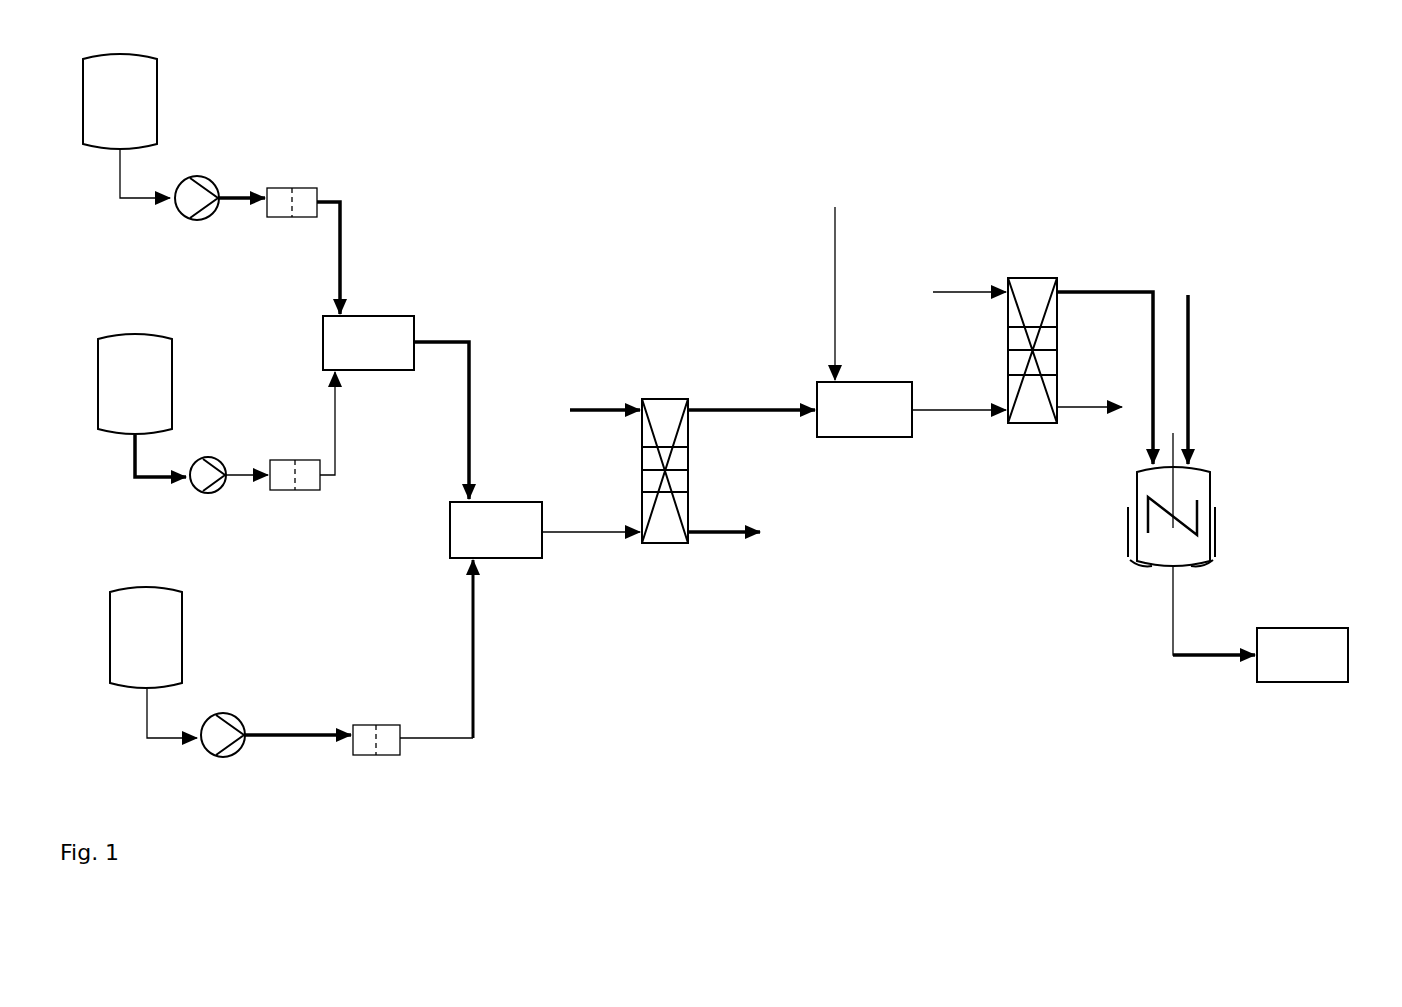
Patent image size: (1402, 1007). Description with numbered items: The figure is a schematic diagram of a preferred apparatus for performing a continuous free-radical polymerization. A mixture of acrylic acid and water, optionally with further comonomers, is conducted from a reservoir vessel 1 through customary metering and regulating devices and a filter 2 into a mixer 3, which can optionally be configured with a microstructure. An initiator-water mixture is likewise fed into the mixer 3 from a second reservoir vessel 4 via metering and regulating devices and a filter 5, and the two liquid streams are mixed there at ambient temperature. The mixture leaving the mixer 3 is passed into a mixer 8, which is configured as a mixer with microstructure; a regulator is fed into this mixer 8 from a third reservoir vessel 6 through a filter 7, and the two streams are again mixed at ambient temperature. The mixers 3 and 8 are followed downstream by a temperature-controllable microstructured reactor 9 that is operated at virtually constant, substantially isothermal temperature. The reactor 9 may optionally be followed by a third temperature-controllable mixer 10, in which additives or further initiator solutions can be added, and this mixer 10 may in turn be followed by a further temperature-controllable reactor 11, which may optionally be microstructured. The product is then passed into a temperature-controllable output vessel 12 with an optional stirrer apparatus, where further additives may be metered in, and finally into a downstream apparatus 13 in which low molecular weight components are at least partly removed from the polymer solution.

The reservoir vessel 1 is at (139, 90).
The filter 2 is at (290, 187).
The mixer 3 is at (407, 322).
The reservoir vessel 4 is at (150, 385).
The filter 5 is at (307, 505).
The reservoir vessel 6 is at (167, 642).
The filter 7 is at (362, 723).
The mixer with microstructure 8 is at (502, 498).
The microstructured reactor 9 is at (685, 500).
The mixer 10 is at (887, 375).
The reactor 11 is at (1058, 355).
The output vessel with stirrer apparatus 12 is at (1210, 497).
The apparatus for removing low molecular weight components 13 is at (1311, 620).